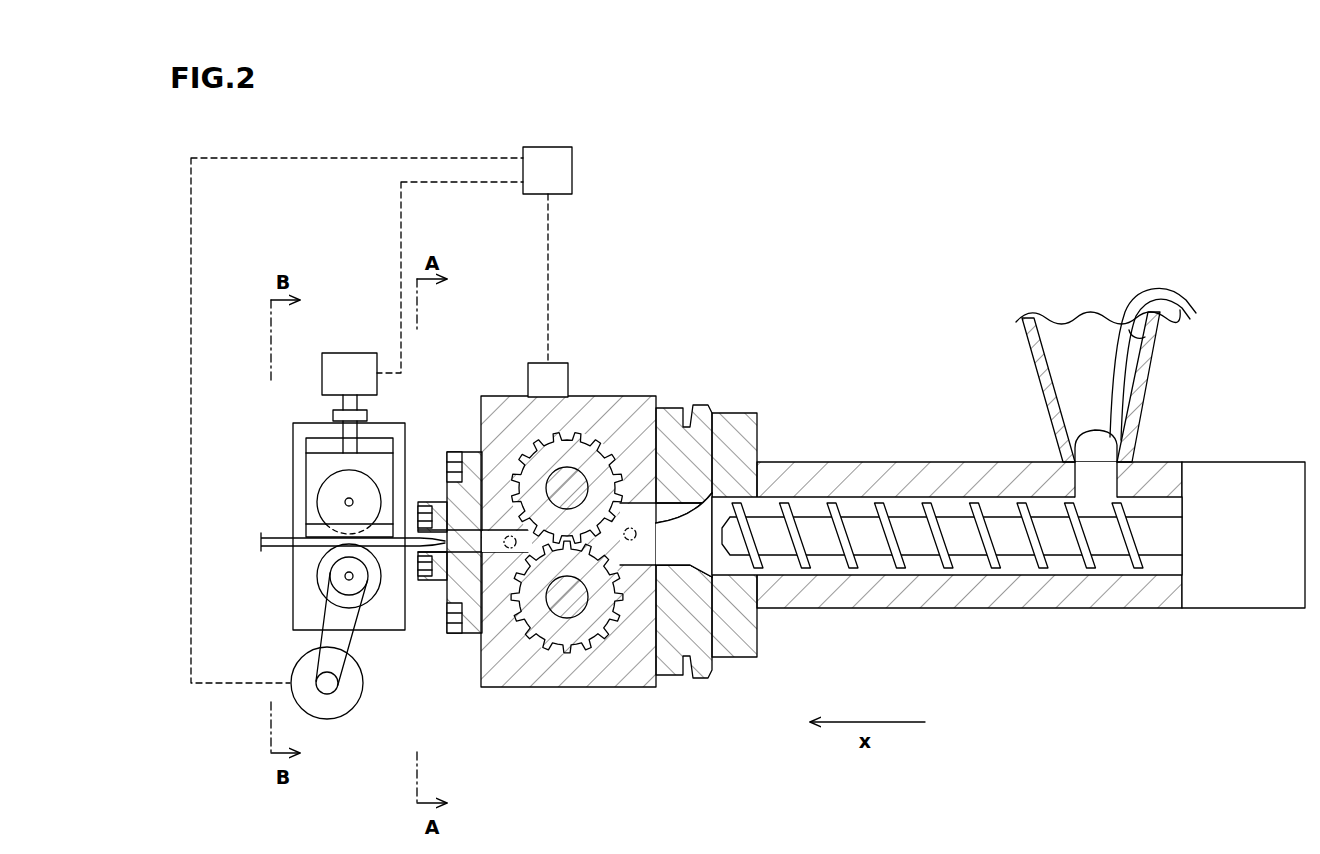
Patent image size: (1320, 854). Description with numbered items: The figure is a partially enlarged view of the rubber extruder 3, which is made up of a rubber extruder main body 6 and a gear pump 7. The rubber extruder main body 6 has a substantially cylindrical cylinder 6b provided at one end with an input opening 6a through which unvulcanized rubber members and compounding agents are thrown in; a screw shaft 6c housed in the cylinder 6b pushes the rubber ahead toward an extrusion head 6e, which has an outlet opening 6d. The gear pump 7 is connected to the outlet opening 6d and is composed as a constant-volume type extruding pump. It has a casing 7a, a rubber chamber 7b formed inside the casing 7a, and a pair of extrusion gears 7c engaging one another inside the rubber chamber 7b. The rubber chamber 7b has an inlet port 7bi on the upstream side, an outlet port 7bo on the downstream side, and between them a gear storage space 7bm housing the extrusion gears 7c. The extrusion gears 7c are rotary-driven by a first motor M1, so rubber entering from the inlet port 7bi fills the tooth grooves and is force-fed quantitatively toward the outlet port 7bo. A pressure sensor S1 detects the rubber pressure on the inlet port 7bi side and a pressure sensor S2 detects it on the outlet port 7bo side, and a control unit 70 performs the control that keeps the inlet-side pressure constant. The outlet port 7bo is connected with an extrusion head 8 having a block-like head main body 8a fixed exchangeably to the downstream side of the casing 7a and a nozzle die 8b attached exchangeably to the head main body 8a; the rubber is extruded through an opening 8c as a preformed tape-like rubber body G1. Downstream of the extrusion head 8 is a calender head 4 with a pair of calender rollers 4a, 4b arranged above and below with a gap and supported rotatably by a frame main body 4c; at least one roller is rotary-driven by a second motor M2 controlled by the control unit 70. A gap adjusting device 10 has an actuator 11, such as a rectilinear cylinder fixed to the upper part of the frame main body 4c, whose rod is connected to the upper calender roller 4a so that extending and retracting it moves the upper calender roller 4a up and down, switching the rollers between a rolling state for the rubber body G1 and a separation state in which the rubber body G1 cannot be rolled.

The control unit 70 is at (555, 147).
The actuator 11 is at (348, 353).
The gap adjusting device 10 is at (318, 467).
The calender head 4 is at (325, 476).
The upper calender roller 4a is at (330, 512).
The lower calender roller 4b is at (330, 578).
The frame main body 4c is at (297, 485).
The second motor M2 is at (290, 683).
The tape-like rubber body G1 is at (418, 560).
The extrusion head 8 is at (455, 509).
The head main body 8a is at (458, 452).
The nozzle die 8b is at (420, 502).
The opening 8c is at (432, 582).
The gear pump 7 is at (562, 491).
The casing 7a is at (500, 396).
The rubber chamber 7b is at (562, 665).
The outlet port 7bo is at (522, 640).
The gear storage space 7bm is at (547, 653).
The inlet port 7bi is at (630, 575).
The extrusion gears 7c is at (582, 437).
The first motor M1 is at (556, 363).
The pressure sensor S1 is at (632, 527).
The pressure sensor S2 is at (508, 548).
The rubber extruder 3 is at (655, 227).
The rubber extruder main body 6 is at (980, 475).
The input opening 6a is at (1165, 287).
The cylinder 6b is at (1060, 600).
The screw shaft 6c is at (975, 550).
The outlet opening 6d is at (714, 494).
The extrusion head 6e is at (668, 404).